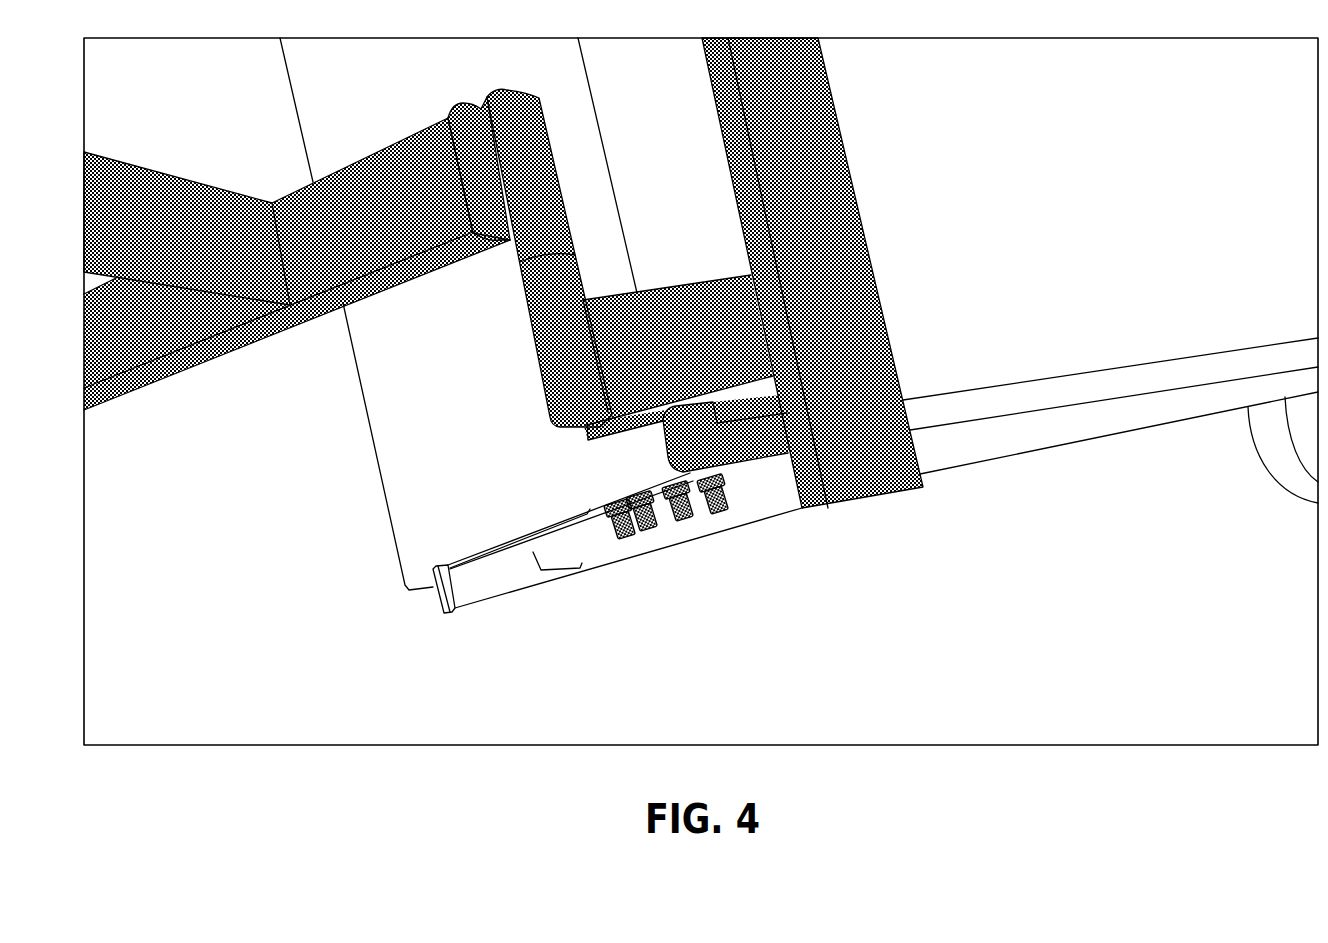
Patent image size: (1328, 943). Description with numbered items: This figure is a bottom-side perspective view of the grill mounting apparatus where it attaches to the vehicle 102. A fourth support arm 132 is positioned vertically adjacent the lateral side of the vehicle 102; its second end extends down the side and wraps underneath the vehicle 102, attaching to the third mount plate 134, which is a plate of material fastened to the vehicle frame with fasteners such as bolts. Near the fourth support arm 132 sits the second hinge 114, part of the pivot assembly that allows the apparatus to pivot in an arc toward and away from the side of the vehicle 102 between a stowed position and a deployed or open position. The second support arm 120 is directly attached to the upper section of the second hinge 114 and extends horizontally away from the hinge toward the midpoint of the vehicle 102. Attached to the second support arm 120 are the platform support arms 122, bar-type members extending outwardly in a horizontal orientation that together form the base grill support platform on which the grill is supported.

The vehicle 102 is at (1013, 178).
The second hinge 114 is at (575, 255).
The second support arm 120 is at (180, 372).
The platform support arms 122 is at (177, 177).
The fourth support arm 132 is at (837, 98).
The third mount plate 134 is at (688, 531).